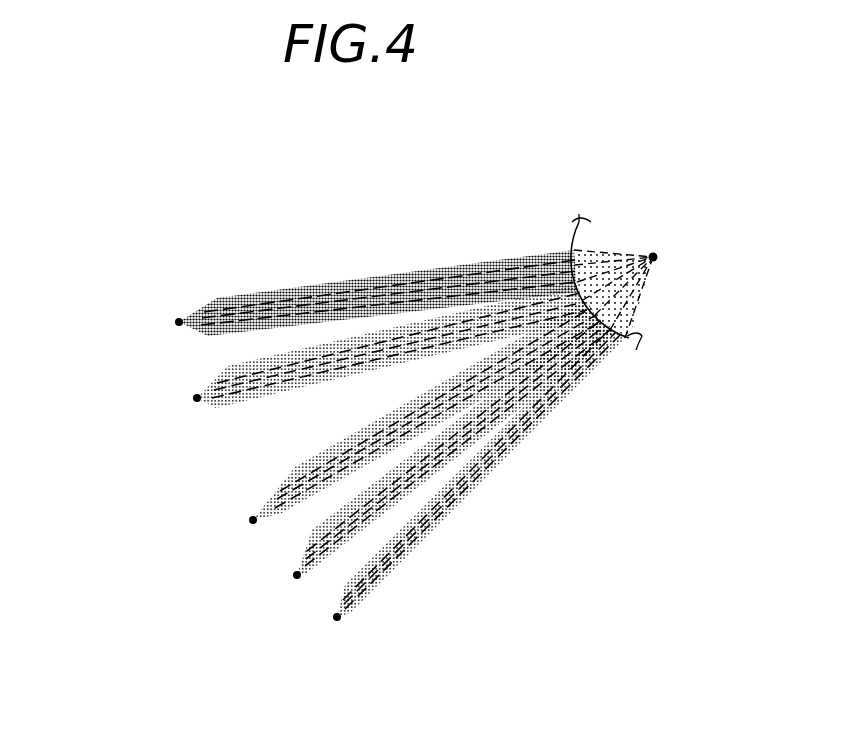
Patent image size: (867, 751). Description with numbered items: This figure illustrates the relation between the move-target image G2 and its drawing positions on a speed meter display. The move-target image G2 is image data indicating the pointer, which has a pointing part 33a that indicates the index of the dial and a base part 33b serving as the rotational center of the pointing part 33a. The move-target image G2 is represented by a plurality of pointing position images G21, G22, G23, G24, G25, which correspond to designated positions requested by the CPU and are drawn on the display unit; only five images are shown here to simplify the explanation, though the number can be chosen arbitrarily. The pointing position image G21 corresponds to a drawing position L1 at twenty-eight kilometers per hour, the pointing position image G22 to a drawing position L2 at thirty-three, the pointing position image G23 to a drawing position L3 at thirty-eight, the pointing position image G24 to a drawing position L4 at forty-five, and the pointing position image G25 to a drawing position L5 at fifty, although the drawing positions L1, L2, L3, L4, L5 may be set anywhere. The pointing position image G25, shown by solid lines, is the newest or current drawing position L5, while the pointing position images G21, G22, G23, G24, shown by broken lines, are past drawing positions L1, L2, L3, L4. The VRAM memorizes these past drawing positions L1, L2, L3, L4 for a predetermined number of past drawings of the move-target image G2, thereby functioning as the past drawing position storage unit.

The move-target image G2 is at (372, 260).
The pointing position image G21 is at (332, 590).
The pointing position image G22 is at (307, 532).
The pointing position image G23 is at (293, 470).
The pointing position image G24 is at (240, 365).
The pointing position image G25 is at (230, 300).
The drawing position L1 is at (337, 620).
The drawing position L2 is at (296, 575).
The drawing position L3 is at (253, 520).
The drawing position L4 is at (197, 398).
The drawing position L5 is at (179, 322).
The pointing part 33a is at (477, 262).
The base part 33b is at (616, 250).